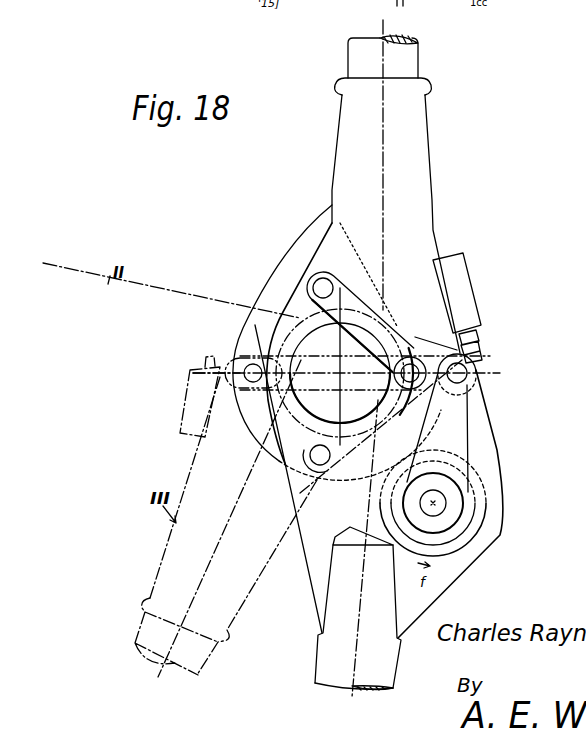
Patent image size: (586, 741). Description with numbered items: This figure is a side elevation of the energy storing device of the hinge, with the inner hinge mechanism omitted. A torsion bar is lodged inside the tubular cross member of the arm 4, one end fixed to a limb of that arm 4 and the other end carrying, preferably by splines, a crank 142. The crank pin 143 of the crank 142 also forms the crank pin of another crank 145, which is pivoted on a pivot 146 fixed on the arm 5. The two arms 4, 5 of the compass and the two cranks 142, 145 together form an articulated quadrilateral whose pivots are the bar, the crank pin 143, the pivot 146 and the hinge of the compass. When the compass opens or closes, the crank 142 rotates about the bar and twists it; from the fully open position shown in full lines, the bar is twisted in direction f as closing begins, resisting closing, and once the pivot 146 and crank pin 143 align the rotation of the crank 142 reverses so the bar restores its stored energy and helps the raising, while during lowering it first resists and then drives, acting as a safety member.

The arm 4 is at (377, 665).
The arm 5 is at (408, 145).
The crank 142 is at (448, 430).
The crank pin 143 is at (470, 370).
The crank 145 is at (393, 325).
The pivot 146 is at (323, 288).